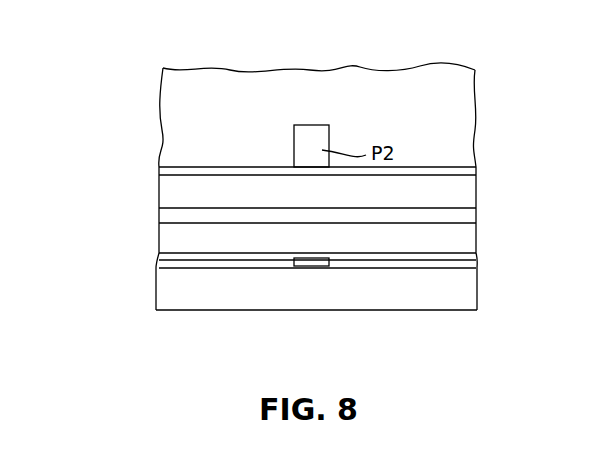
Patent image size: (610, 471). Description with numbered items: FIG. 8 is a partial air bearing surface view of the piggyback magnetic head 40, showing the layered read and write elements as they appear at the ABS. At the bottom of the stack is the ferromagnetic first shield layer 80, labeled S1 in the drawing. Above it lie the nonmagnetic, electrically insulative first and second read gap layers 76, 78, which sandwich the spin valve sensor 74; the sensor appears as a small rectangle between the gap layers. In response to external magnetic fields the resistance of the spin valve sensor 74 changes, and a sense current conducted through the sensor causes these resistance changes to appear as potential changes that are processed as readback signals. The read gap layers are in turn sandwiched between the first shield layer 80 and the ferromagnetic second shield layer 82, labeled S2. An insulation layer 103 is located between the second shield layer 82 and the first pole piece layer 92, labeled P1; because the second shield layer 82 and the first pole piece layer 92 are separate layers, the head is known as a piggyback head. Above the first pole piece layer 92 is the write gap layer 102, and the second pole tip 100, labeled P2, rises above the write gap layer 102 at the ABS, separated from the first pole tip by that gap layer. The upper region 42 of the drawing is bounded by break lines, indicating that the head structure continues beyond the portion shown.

The piggyback magnetic head 40 is at (496, 84).
The upper region 42 is at (165, 97).
The second pole tip 100 is at (309, 133).
The write gap layer 102 is at (231, 167).
The first pole piece layer 92 is at (165, 193).
The insulation layer 103 is at (468, 218).
The second shield layer 82 is at (163, 242).
The first read gap layer 76 is at (218, 270).
The second read gap layer 78 is at (437, 260).
The spin valve sensor 74 is at (309, 266).
The first shield layer 80 is at (466, 296).